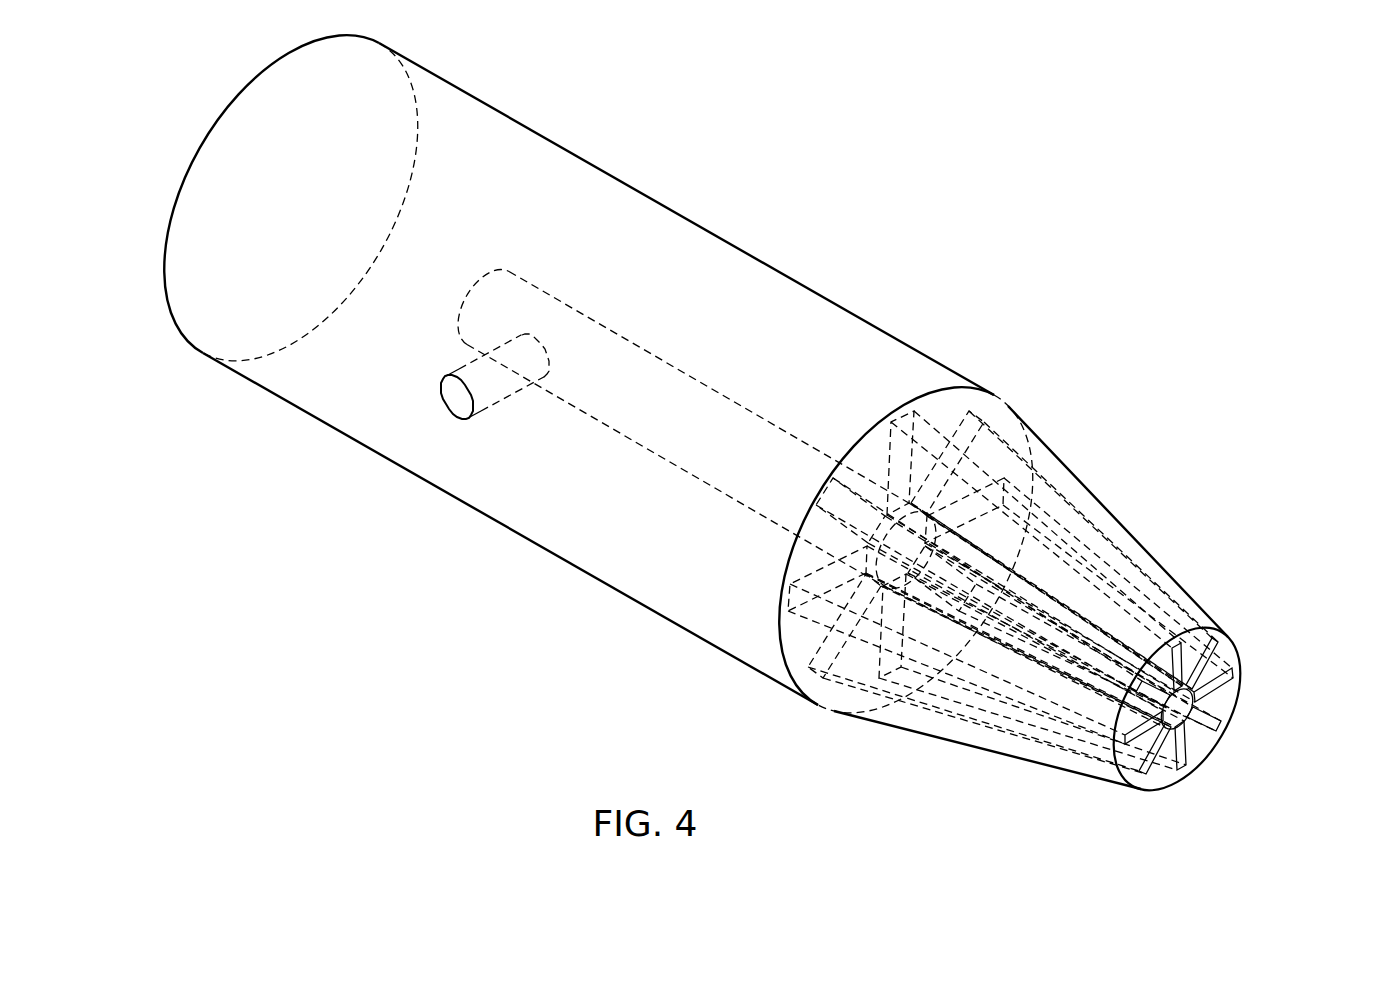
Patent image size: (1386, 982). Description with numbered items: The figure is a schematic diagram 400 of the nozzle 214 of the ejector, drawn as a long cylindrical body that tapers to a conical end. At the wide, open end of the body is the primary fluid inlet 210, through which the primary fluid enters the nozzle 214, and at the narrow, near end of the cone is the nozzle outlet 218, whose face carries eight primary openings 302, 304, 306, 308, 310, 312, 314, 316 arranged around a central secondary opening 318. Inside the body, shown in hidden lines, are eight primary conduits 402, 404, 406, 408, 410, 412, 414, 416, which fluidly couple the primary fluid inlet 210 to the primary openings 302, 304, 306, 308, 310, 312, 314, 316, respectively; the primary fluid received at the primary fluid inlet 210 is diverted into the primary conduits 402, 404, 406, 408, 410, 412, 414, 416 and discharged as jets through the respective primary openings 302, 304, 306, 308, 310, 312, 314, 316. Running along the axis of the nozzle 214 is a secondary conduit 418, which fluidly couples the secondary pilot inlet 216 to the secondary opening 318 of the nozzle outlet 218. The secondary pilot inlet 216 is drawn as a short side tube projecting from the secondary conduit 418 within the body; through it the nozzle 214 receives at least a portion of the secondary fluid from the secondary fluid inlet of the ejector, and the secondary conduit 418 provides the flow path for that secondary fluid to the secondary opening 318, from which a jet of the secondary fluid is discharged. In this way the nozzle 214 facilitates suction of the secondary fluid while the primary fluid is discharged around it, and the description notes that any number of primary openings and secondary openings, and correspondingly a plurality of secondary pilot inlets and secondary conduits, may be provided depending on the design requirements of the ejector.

The primary fluid inlet 210 is at (178, 193).
The nozzle 214 is at (850, 313).
The secondary pilot inlet 216 is at (458, 398).
The nozzle outlet 218 is at (1248, 664).
The primary opening 302 is at (1216, 646).
The primary opening 304 is at (1240, 700).
The primary opening 306 is at (1213, 730).
The primary opening 308 is at (1187, 753).
The primary opening 310 is at (1147, 772).
The primary opening 312 is at (1135, 740).
The primary opening 314 is at (1113, 710).
The primary opening 316 is at (1180, 658).
The secondary opening 318 is at (1190, 708).
The schematic diagram 400 is at (1130, 162).
The primary conduit 402 is at (1012, 445).
The primary conduit 404 is at (1065, 535).
The primary conduit 406 is at (1197, 730).
The primary conduit 408 is at (968, 700).
The primary conduit 410 is at (897, 717).
The primary conduit 412 is at (820, 616).
The primary conduit 414 is at (847, 528).
The primary conduit 416 is at (928, 440).
The secondary conduit 418 is at (623, 435).